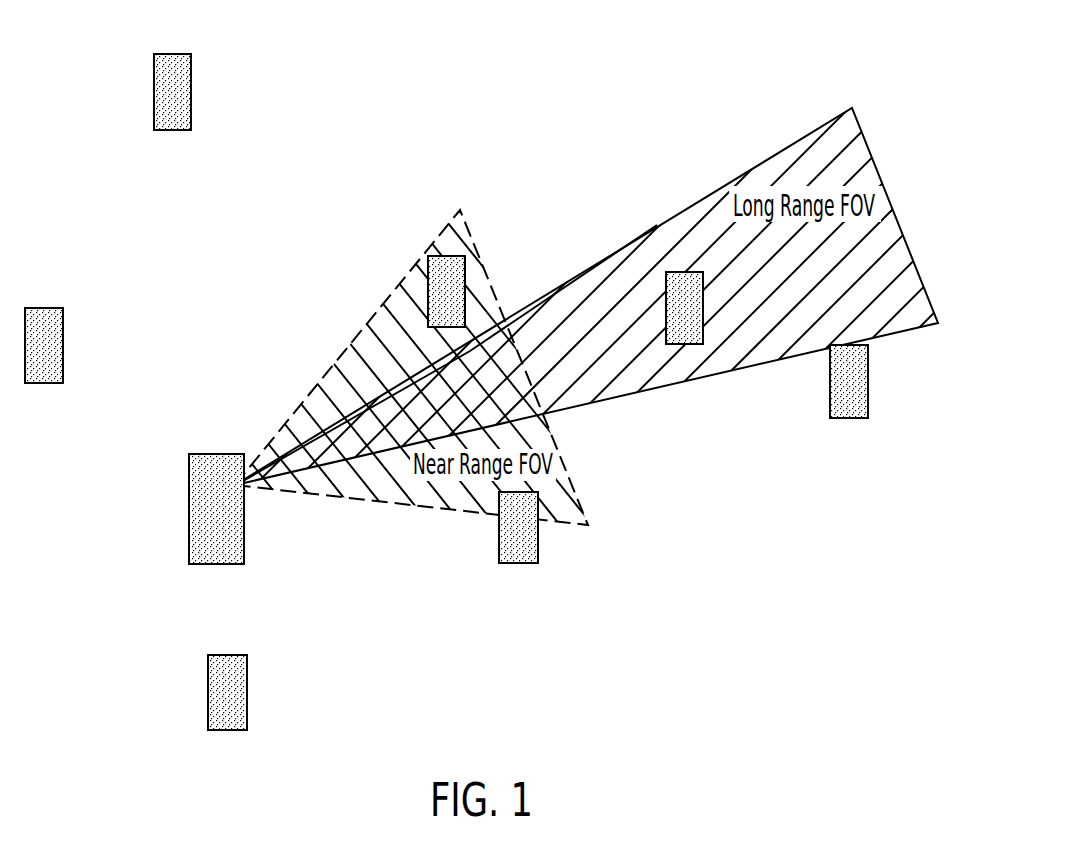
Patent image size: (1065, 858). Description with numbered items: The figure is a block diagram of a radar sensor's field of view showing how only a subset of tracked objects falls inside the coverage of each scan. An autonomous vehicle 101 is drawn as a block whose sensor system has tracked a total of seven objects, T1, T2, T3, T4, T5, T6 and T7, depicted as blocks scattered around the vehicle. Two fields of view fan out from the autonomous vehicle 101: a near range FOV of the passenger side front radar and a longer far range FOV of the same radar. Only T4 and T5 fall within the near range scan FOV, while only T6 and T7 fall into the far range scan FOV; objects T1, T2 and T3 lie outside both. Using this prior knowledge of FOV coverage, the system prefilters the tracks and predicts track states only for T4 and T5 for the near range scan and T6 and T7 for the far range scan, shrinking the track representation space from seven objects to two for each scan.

The autonomous vehicle 101 is at (195, 543).
The tracked object T1 is at (172, 92).
The tracked object T2 is at (44, 345).
The tracked object T3 is at (227, 692).
The tracked object T4 is at (518, 527).
The tracked object T5 is at (446, 291).
The tracked object T6 is at (684, 308).
The tracked object T7 is at (849, 381).